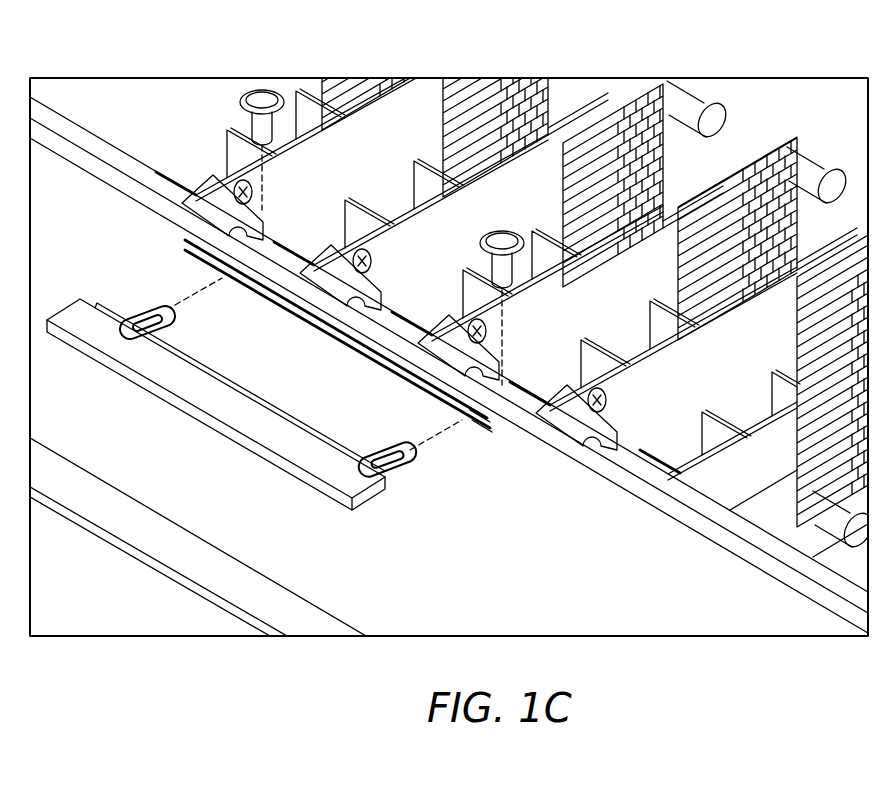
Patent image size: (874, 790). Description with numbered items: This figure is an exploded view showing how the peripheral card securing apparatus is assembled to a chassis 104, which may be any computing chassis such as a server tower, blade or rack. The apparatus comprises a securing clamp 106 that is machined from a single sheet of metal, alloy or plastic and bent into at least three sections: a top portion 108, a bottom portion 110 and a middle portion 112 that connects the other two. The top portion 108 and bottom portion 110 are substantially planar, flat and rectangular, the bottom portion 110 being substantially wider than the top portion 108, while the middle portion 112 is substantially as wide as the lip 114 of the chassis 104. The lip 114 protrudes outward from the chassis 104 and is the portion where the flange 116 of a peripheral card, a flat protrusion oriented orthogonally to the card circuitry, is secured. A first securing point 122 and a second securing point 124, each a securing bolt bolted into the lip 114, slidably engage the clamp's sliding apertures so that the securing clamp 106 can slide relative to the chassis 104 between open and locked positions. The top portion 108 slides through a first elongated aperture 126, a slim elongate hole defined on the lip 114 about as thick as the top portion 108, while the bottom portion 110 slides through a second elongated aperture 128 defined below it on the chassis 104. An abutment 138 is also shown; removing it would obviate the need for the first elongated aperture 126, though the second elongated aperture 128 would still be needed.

The chassis 104 is at (147, 160).
The securing clamp 106 is at (155, 370).
The top portion 108 is at (350, 485).
The bottom portion 110 is at (367, 510).
The middle portion 112 is at (205, 420).
The lip 114 is at (88, 137).
The flange 116 is at (325, 272).
The first securing point 122 is at (500, 242).
The second securing point 124 is at (262, 100).
The first elongated aperture 126 is at (480, 420).
The second elongated aperture 128 is at (192, 264).
The abutment 138 is at (355, 335).